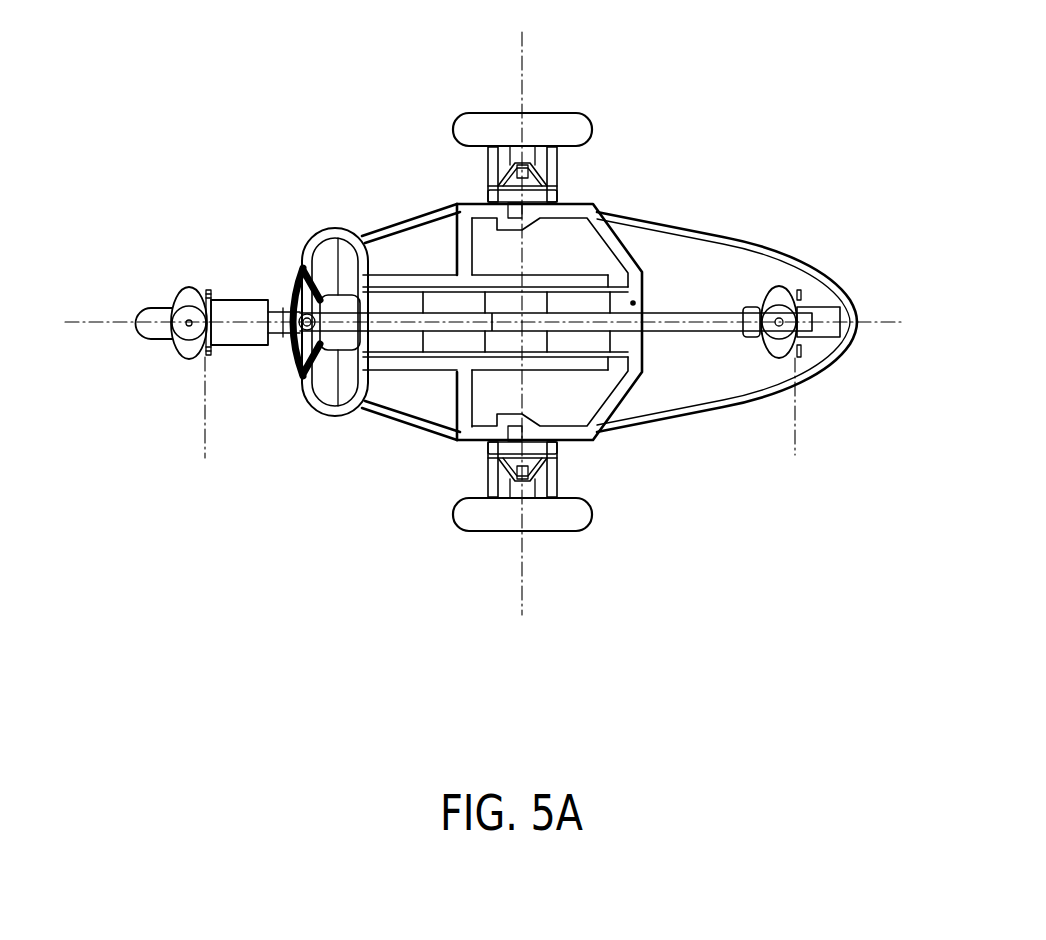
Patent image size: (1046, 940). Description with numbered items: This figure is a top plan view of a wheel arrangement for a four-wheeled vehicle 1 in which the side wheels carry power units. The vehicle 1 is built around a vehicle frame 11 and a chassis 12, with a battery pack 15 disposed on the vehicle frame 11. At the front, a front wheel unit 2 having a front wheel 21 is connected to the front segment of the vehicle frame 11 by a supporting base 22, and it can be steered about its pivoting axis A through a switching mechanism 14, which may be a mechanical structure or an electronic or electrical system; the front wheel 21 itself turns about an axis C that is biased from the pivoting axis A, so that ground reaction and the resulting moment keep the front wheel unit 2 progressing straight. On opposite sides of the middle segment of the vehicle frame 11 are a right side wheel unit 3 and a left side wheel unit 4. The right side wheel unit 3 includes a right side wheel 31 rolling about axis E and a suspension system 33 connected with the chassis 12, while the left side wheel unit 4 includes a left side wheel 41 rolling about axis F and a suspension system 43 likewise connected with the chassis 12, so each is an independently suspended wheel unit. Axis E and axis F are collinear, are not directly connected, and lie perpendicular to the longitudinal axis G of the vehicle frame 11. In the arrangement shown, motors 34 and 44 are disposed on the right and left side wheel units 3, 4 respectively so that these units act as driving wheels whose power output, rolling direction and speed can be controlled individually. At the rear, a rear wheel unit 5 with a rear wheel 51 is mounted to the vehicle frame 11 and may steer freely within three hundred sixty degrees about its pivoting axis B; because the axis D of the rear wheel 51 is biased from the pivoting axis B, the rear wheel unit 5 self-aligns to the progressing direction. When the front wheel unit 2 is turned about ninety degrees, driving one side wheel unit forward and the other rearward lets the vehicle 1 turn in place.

The four-wheeled vehicle 1 is at (291, 195).
The front wheel unit 2 is at (141, 325).
The right side wheel unit 3 is at (517, 131).
The left side wheel unit 4 is at (516, 512).
The rear wheel unit 5 is at (830, 292).
The vehicle frame 11 is at (678, 316).
The chassis 12 is at (692, 410).
The switching mechanism 14 is at (240, 308).
The battery pack 15 is at (390, 300).
The front wheel 21 is at (140, 338).
The supporting base 22 is at (188, 352).
The right side wheel 31 is at (480, 121).
The suspension system 33 is at (555, 173).
The motor 34 is at (493, 178).
The left side wheel 41 is at (480, 525).
The suspension system 43 is at (557, 470).
The motor 44 is at (493, 468).
The rear wheel 51 is at (823, 337).
The pivoting axis A is at (189, 320).
The pivoting axis B is at (779, 318).
The axis of the front wheel C is at (207, 418).
The axis of the rear wheel D is at (797, 418).
The axis of the right side wheel E is at (520, 57).
The axis of the left side wheel F is at (520, 568).
The longitudinal axis G is at (887, 320).